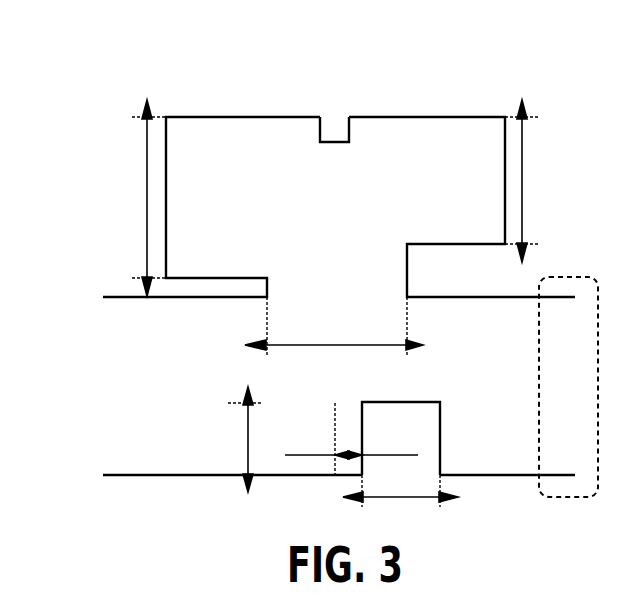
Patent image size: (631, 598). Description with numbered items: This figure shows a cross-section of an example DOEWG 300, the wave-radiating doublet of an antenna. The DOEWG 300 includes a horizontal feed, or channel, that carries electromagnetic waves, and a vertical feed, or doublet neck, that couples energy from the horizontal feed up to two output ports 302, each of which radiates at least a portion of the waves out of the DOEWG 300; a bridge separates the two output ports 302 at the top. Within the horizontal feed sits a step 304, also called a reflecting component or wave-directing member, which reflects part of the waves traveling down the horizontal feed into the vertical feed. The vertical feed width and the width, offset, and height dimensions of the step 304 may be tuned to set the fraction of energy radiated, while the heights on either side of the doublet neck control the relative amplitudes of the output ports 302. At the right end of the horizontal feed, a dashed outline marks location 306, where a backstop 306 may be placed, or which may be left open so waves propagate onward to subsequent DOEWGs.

The DOEWG 300 is at (82, 94).
The output ports 302 is at (438, 134).
The step 304 is at (433, 400).
The backstop location 306 is at (577, 277).